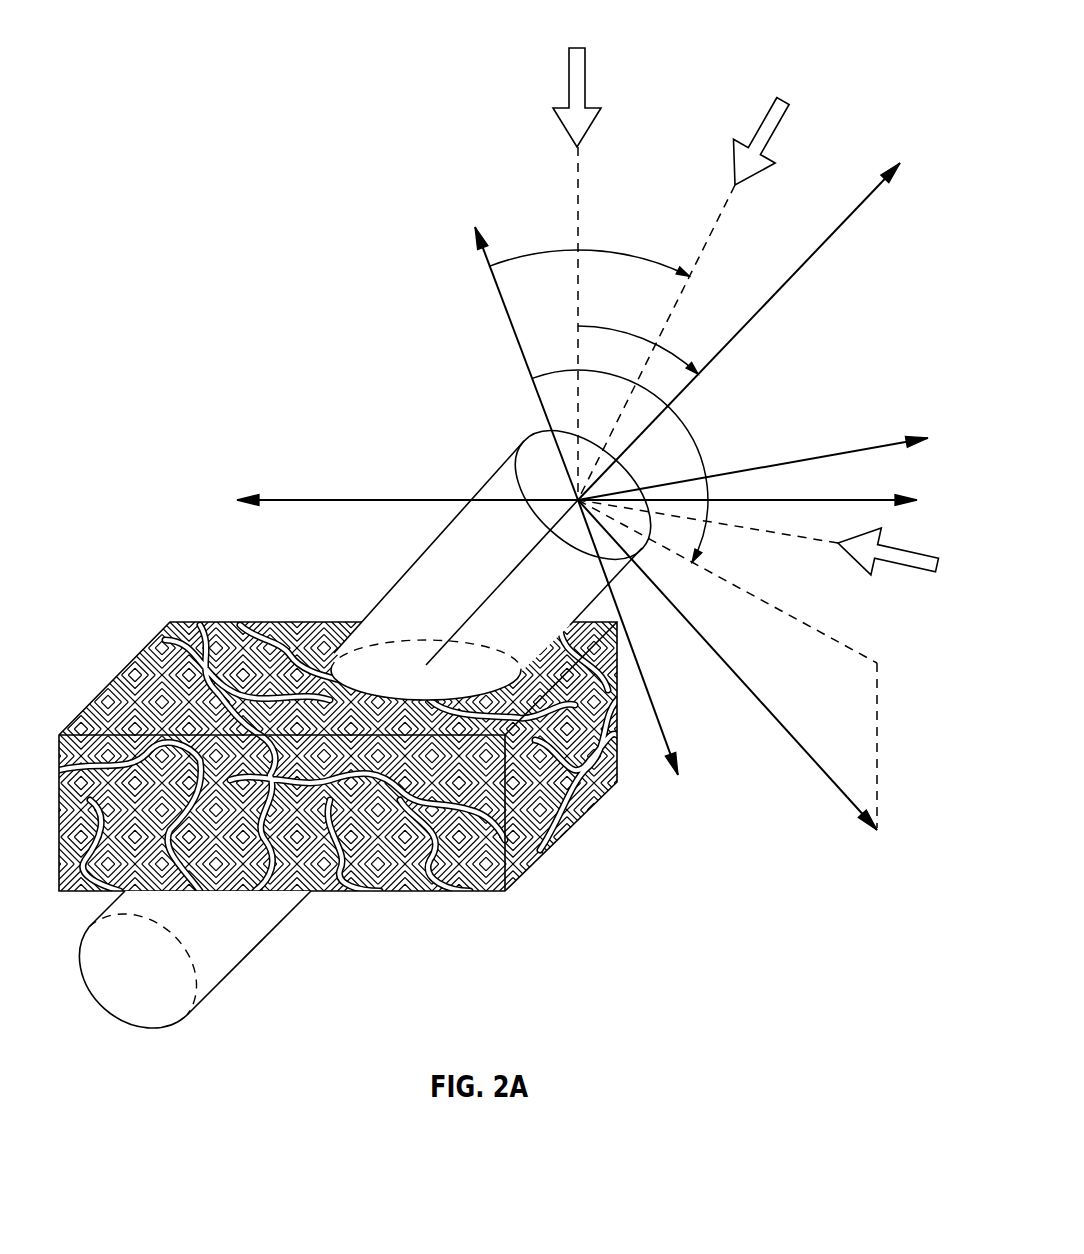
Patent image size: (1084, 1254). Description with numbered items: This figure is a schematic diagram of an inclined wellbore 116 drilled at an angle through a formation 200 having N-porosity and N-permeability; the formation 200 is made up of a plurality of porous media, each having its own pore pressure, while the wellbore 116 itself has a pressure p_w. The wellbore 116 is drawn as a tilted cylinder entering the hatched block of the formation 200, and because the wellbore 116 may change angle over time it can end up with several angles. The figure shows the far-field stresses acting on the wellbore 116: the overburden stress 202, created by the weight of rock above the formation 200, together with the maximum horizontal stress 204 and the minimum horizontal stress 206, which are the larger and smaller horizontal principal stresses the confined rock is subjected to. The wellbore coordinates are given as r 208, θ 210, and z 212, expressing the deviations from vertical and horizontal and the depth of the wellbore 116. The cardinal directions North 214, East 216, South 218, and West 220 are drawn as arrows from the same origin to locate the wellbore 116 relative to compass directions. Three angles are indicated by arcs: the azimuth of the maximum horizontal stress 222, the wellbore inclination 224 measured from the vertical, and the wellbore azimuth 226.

The wellbore 116 is at (425, 553).
The formation 200 is at (122, 672).
The overburden stress 202 is at (577, 46).
The maximum horizontal stress 204 is at (786, 99).
The minimum horizontal stress 206 is at (908, 571).
The r coordinate 208 is at (773, 713).
The θ coordinate 210 is at (880, 444).
The z coordinate 212 is at (815, 255).
The North 214 is at (497, 287).
The East 216 is at (266, 500).
The South 218 is at (650, 690).
The West 220 is at (877, 500).
The azimuth of the maximum horizontal stress 222 is at (545, 250).
The wellbore inclination 224 is at (612, 331).
The wellbore azimuth 226 is at (694, 440).